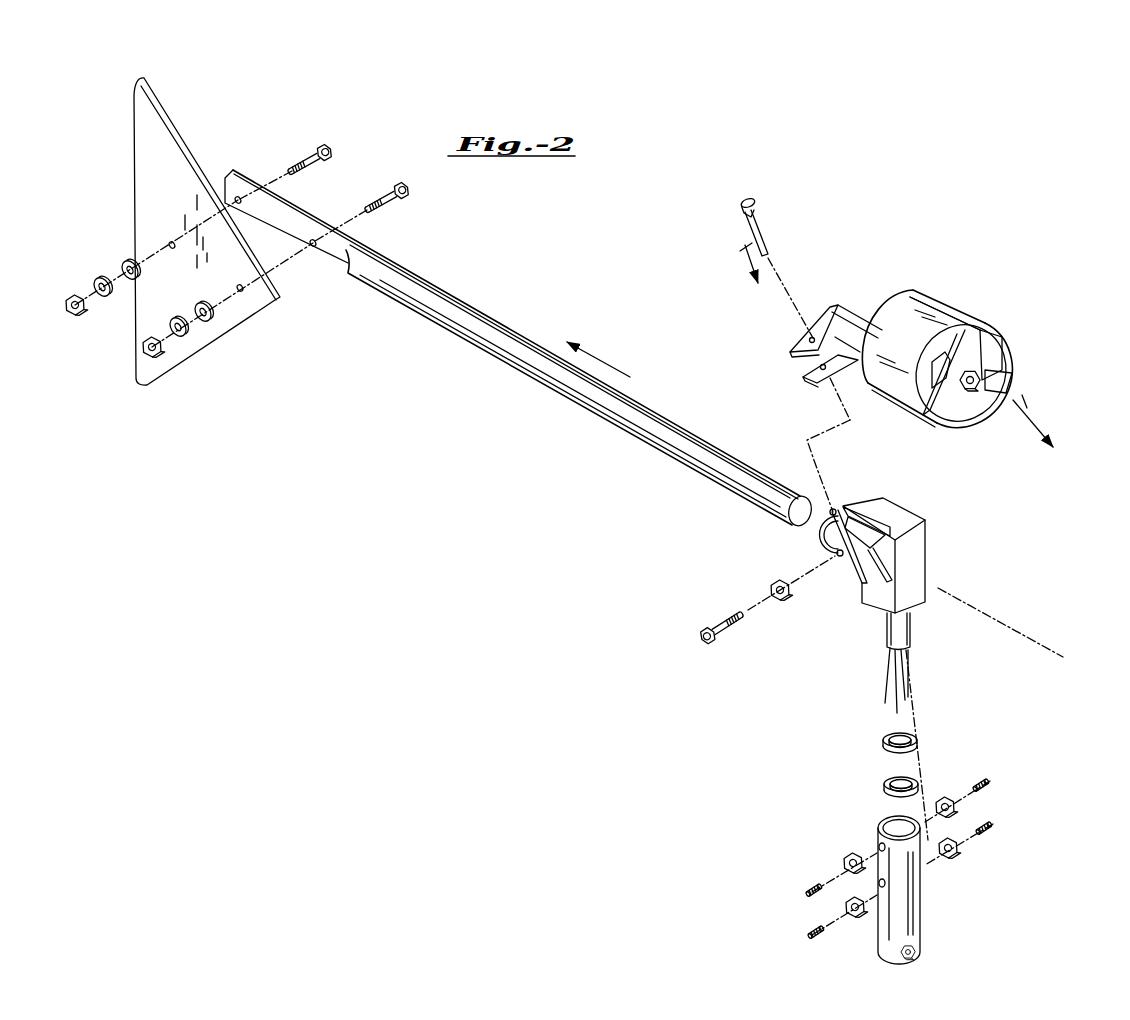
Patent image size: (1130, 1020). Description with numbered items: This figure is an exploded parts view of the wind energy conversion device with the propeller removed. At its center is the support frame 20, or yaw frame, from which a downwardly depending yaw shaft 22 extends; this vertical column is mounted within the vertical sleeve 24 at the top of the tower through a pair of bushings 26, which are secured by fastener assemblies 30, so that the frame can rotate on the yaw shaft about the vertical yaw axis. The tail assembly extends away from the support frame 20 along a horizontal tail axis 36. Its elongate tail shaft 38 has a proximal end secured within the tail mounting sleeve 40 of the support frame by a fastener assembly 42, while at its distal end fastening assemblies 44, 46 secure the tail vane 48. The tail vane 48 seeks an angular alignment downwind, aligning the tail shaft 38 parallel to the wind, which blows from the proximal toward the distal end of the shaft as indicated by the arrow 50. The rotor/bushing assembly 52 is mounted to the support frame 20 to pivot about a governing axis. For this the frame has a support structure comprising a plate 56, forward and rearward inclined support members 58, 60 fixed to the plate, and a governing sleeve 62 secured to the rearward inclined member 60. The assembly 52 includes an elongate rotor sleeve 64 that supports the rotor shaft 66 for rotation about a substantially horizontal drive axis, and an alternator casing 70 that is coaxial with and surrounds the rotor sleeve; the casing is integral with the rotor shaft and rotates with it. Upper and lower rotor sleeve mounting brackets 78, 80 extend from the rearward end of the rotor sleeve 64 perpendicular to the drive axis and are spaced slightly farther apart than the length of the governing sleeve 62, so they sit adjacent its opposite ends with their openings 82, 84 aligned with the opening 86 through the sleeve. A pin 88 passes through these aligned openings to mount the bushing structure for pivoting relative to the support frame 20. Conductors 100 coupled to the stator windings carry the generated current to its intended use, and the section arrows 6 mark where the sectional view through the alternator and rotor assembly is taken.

The support frame 20 is at (926, 571).
The yaw shaft 22 is at (913, 631).
The vertical sleeve 24 is at (922, 915).
The bushing 26 is at (883, 738).
The fastener assemblies 30 is at (991, 768).
The horizontal tail axis 36 is at (1044, 642).
The tail shaft 38 is at (462, 298).
The tail mounting sleeve 40 is at (832, 546).
The fastener assembly 42 is at (741, 627).
The fastening assembly 44 is at (288, 158).
The fastening assembly 46 is at (384, 180).
The tail vane 48 is at (232, 325).
The arrow 50 is at (592, 358).
The rotor/bushing assembly 52 is at (937, 302).
The plate 56 is at (852, 503).
The forward inclined support member 58 is at (882, 582).
The rearward inclined support member 60 is at (853, 573).
The governing sleeve 62 is at (825, 522).
The rotor sleeve 64 is at (860, 306).
The rotor shaft 66 is at (982, 372).
The alternator casing 70 is at (912, 290).
The upper rotor sleeve mounting bracket 78 is at (793, 352).
The lower rotor sleeve mounting bracket 80 is at (810, 372).
The opening 82 is at (812, 334).
The opening 84 is at (845, 375).
The opening 86 is at (829, 507).
The pin 88 is at (765, 232).
The conductors 100 is at (890, 672).
The section line 6- 6 is at (898, 359).